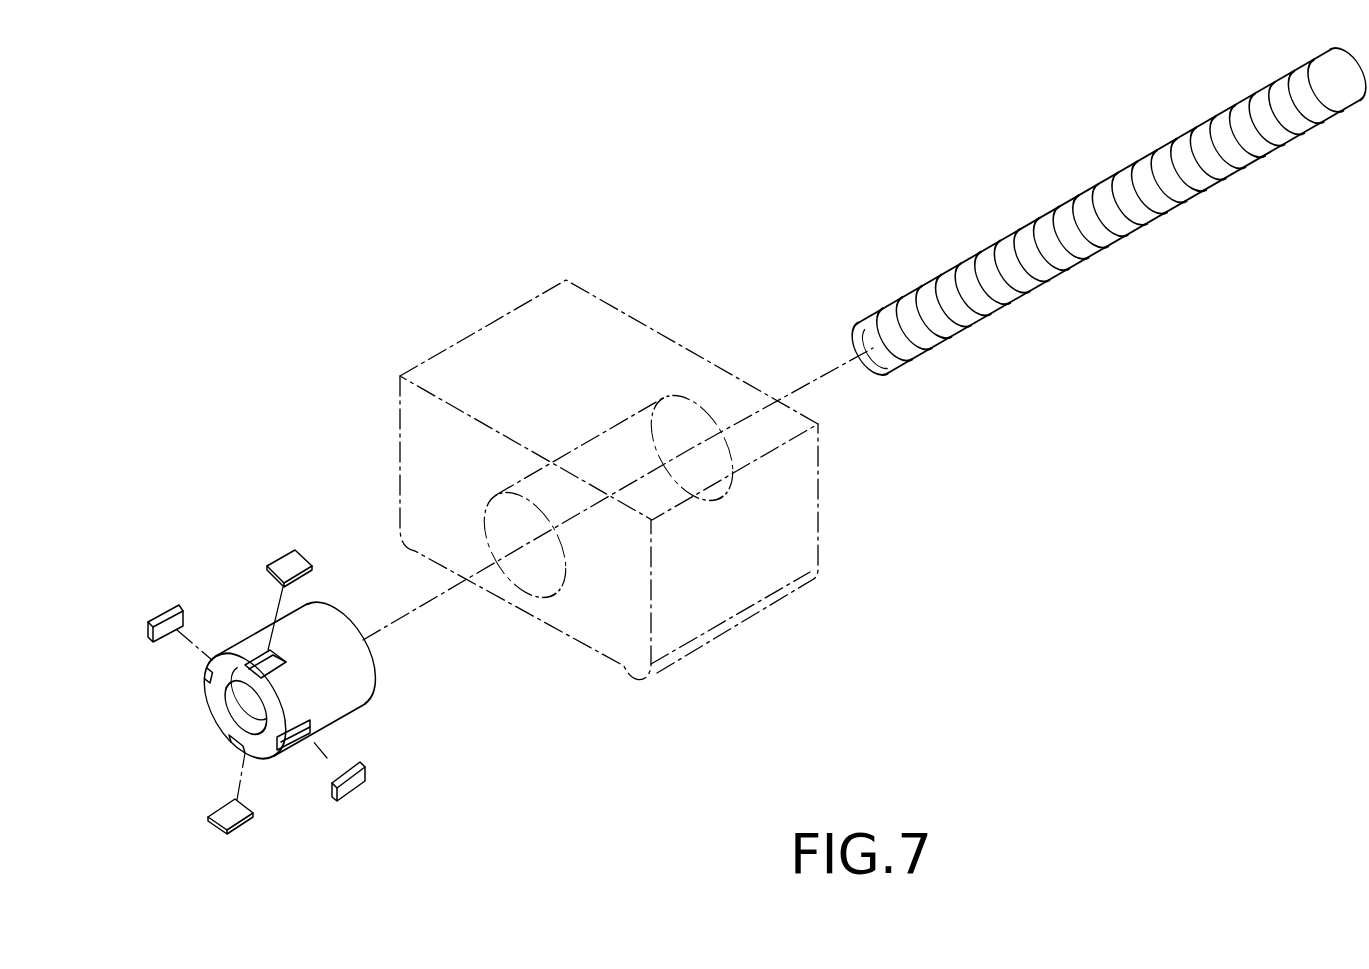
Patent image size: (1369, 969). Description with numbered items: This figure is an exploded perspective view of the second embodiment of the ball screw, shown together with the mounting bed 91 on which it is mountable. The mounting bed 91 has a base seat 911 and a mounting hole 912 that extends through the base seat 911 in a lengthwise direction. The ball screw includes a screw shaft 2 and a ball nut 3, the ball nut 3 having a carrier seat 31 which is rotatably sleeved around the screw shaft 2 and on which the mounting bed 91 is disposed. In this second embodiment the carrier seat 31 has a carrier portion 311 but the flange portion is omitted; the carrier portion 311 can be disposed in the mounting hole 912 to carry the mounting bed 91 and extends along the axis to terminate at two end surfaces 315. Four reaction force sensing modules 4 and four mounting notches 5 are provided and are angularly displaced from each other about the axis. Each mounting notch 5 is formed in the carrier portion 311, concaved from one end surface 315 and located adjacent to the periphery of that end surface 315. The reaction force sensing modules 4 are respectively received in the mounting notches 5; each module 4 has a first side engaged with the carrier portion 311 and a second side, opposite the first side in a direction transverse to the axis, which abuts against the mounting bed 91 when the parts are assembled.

The screw shaft 2 is at (1140, 249).
The mounting bed 91 is at (609, 472).
The base seat 911 is at (746, 577).
The mounting hole 912 is at (549, 598).
The ball nut 3 is at (279, 675).
The carrier seat 31 is at (272, 642).
The carrier portion 311 is at (332, 630).
The end surface 315 is at (362, 640).
The reaction force sensing module 4 is at (300, 543).
The mounting notch 5 is at (252, 652).